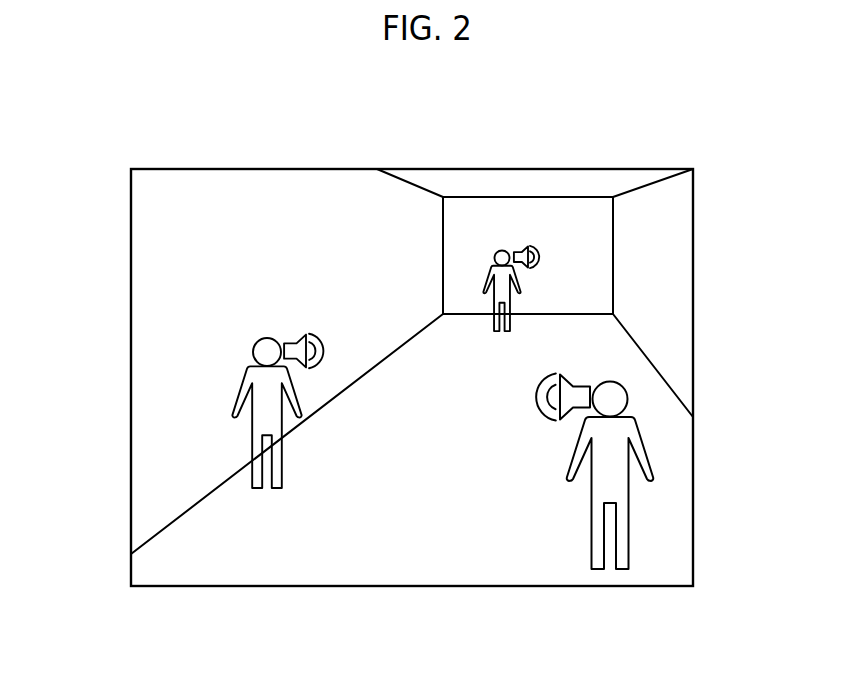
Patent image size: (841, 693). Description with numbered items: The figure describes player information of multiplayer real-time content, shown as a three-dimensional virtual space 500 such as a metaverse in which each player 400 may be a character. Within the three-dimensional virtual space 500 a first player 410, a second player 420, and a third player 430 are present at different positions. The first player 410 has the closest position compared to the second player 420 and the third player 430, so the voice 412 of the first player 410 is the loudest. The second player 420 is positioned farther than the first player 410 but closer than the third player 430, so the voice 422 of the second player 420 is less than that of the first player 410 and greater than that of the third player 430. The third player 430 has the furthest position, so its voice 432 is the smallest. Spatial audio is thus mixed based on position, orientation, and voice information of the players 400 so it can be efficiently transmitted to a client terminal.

The 3-dimensional virtual space 500 is at (297, 190).
The player 400 is at (617, 680).
The first player 410 is at (628, 398).
The voice of the first player 412 is at (532, 399).
The second player 420 is at (253, 348).
The voice of the second player 422 is at (328, 351).
The third player 430 is at (497, 248).
The voice of the third player 432 is at (545, 256).